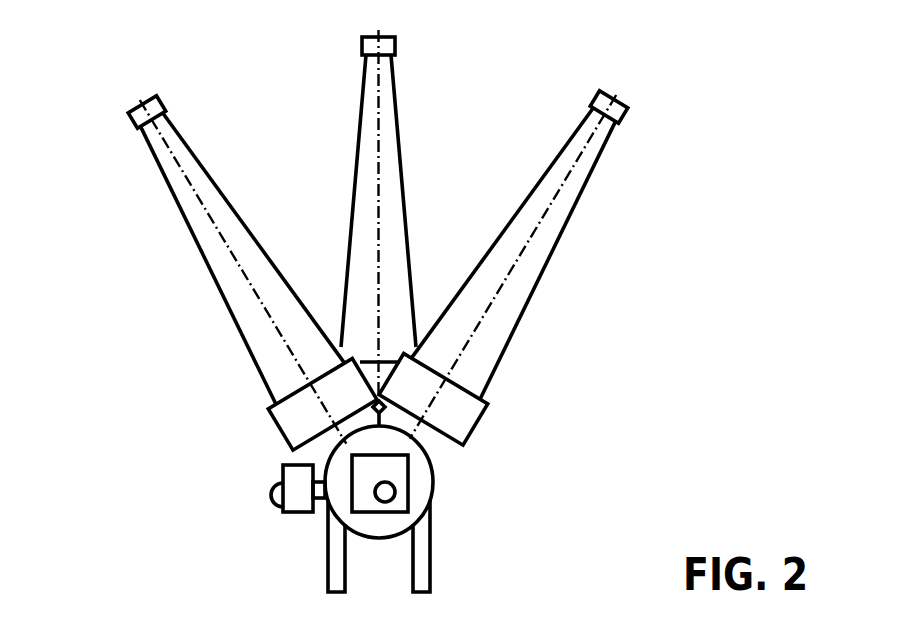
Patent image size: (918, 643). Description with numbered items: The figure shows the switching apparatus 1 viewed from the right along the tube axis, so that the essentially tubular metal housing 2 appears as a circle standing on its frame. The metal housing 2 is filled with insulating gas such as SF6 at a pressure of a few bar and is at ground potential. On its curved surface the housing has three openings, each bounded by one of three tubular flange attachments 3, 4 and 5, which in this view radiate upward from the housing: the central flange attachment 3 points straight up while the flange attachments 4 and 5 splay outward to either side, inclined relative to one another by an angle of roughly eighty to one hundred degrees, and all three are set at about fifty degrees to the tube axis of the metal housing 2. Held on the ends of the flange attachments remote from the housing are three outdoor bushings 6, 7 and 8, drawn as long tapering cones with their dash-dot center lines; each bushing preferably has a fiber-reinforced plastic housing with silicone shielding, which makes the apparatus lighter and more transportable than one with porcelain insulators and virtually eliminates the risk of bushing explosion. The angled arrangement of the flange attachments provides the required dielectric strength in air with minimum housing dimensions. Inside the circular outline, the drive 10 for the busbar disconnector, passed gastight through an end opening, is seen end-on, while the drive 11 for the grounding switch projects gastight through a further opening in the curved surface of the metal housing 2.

The switching apparatus 1 is at (261, 122).
The metal housing 2 is at (365, 523).
The flange attachment 3 is at (384, 375).
The flange attachment 4 is at (323, 445).
The flange attachment 5 is at (436, 446).
The outdoor bushing 6 is at (384, 144).
The outdoor bushing 7 is at (210, 234).
The outdoor bushing 8 is at (547, 231).
The drive for a busbar disconnector 10 is at (392, 471).
The drive for a grounding switch 11 is at (297, 480).